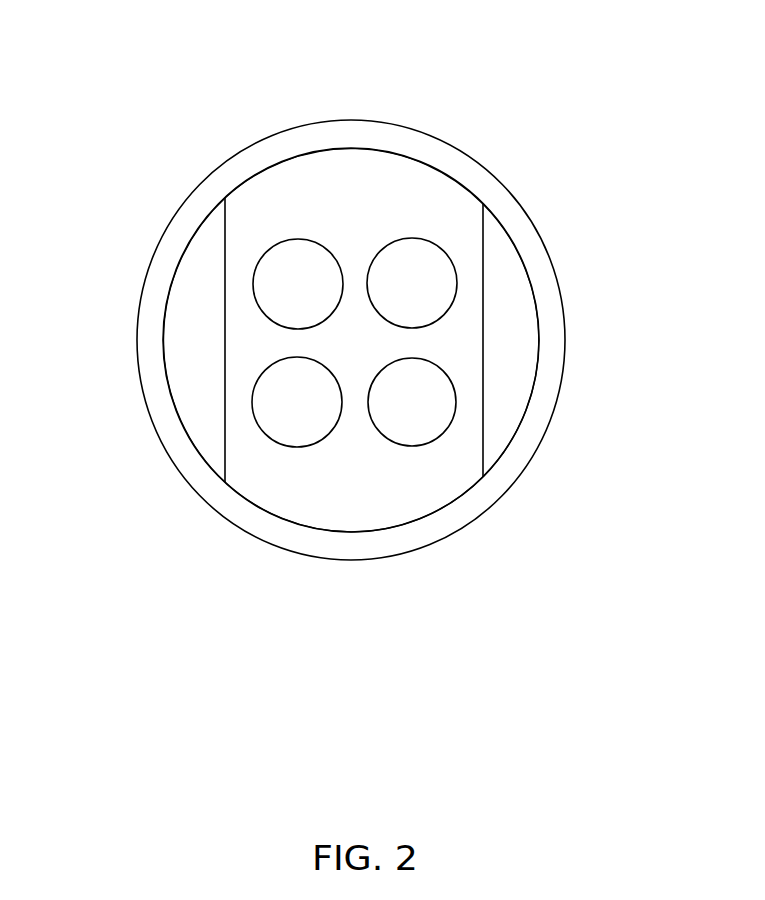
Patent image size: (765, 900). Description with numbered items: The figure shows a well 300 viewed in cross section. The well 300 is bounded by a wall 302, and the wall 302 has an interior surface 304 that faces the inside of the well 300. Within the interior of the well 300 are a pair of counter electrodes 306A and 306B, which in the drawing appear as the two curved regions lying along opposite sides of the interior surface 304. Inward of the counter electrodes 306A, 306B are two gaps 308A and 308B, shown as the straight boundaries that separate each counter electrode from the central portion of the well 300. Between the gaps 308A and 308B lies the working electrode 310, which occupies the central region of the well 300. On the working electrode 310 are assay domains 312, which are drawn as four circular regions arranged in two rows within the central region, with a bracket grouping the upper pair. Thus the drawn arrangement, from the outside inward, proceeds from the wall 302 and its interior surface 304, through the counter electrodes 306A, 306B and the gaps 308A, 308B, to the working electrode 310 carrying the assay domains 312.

The well 300 is at (490, 147).
The wall 302 is at (227, 183).
The interior surface 304 is at (193, 240).
The counter electrode 306A is at (195, 285).
The counter electrode 306B is at (497, 255).
The gap 308A is at (223, 345).
The gap 308B is at (483, 283).
The working electrode 310 is at (237, 443).
The assay domains 312 is at (253, 225).